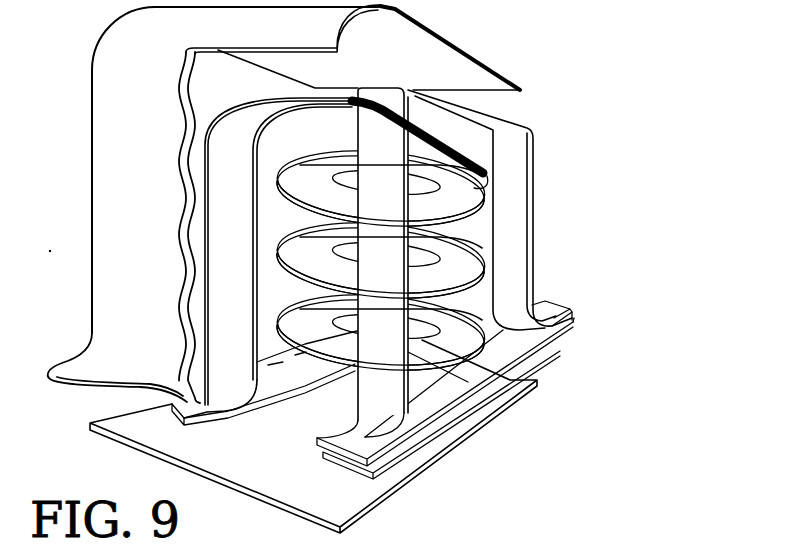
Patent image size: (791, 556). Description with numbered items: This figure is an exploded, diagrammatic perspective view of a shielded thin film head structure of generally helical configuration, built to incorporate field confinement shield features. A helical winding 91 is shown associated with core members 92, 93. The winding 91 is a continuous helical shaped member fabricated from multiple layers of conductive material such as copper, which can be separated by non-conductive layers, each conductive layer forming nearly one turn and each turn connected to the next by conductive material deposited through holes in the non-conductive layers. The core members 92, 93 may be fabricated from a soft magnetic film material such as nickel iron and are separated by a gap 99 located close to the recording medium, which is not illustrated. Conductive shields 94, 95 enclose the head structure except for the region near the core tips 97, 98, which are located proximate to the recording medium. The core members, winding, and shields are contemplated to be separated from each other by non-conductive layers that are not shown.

The helical winding 91 is at (468, 223).
The core member 92 is at (343, 436).
The core member 93 is at (346, 465).
The conductive shield 94 is at (405, 10).
The conductive shield 95 is at (490, 418).
The core tip 97 is at (557, 306).
The core tip 98 is at (575, 323).
The gap 99 is at (572, 310).